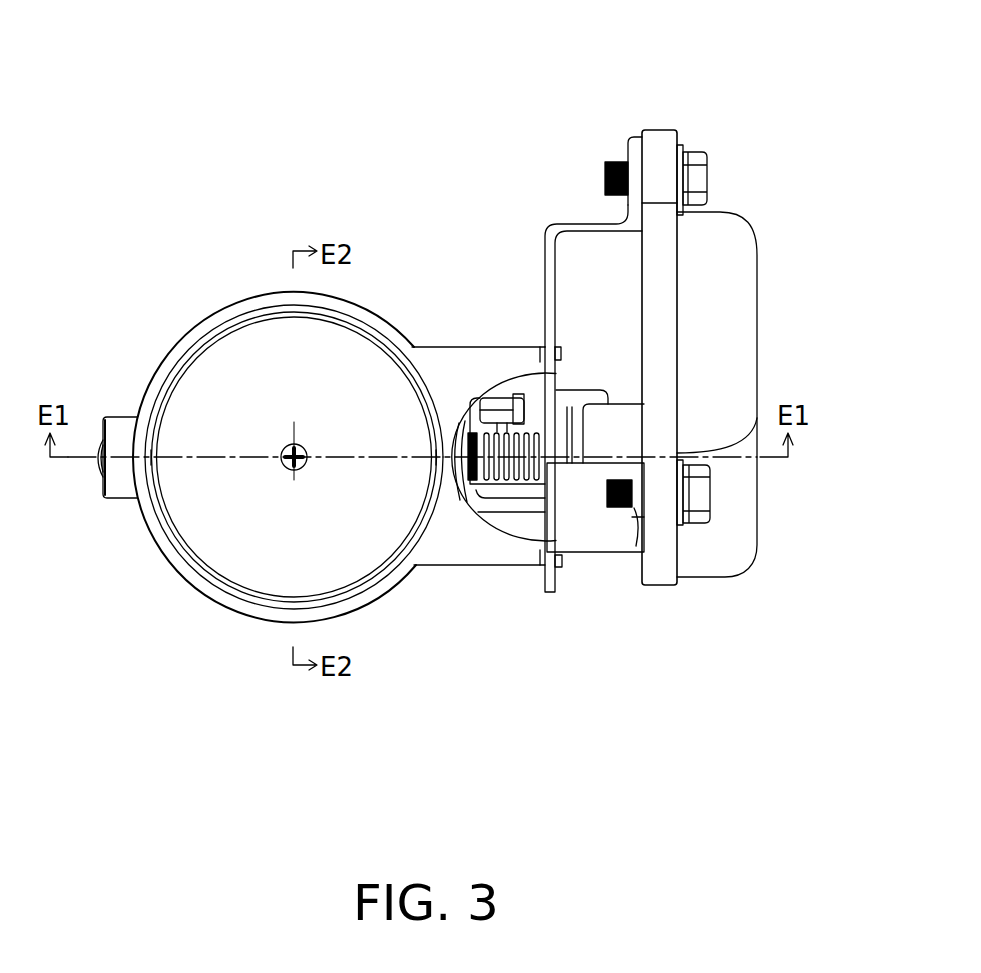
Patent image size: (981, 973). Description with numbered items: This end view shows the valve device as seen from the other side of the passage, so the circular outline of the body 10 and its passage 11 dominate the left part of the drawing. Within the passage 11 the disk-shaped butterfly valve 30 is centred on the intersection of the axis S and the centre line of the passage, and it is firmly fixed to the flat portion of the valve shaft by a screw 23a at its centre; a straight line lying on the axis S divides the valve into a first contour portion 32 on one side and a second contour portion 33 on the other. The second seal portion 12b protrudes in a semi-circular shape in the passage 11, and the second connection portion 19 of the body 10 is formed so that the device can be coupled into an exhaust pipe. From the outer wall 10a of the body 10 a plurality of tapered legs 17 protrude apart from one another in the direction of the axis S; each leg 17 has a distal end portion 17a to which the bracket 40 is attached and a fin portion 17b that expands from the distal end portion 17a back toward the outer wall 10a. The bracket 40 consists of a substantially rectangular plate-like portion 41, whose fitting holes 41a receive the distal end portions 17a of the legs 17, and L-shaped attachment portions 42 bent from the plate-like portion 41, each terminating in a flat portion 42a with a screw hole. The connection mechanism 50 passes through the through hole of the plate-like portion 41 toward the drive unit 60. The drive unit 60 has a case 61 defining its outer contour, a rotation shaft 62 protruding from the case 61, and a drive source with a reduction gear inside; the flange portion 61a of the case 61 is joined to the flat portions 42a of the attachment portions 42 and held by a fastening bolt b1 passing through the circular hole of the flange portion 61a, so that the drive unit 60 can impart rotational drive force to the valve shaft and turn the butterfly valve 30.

The body 10 is at (232, 296).
The outer wall 10a is at (410, 575).
The passage 11 is at (378, 600).
The second seal portion 12b is at (353, 327).
The leg 17 is at (467, 347).
The distal end portion 17a is at (548, 345).
The fin portion 17b is at (462, 397).
The second connection portion 19 is at (247, 602).
The screw 23a is at (283, 463).
The butterfly valve 30 is at (195, 490).
The first contour portion 32 is at (247, 578).
The second contour portion 33 is at (228, 347).
The bracket 40 is at (563, 592).
The plate-like portion 41 is at (553, 283).
The fitting hole 41a is at (557, 347).
The attachment portion 42 is at (600, 226).
The flat portion 42a is at (631, 137).
The connection mechanism 50 is at (500, 496).
The drive unit 60 is at (728, 582).
The case 61 is at (693, 582).
The flange portion 61a is at (662, 146).
The rotation shaft 62 is at (577, 430).
The fastening bolt b1 is at (708, 167).
The axis S is at (103, 490).